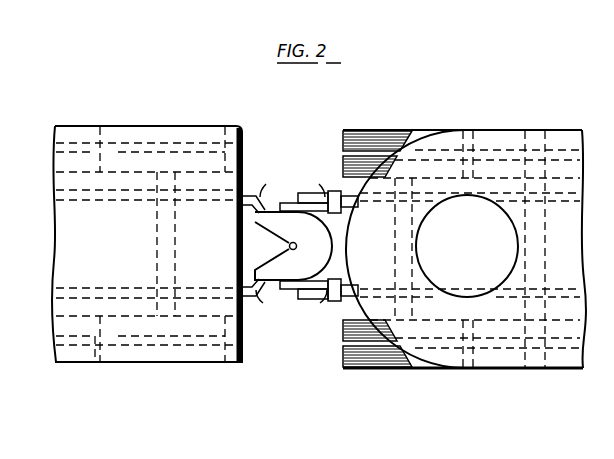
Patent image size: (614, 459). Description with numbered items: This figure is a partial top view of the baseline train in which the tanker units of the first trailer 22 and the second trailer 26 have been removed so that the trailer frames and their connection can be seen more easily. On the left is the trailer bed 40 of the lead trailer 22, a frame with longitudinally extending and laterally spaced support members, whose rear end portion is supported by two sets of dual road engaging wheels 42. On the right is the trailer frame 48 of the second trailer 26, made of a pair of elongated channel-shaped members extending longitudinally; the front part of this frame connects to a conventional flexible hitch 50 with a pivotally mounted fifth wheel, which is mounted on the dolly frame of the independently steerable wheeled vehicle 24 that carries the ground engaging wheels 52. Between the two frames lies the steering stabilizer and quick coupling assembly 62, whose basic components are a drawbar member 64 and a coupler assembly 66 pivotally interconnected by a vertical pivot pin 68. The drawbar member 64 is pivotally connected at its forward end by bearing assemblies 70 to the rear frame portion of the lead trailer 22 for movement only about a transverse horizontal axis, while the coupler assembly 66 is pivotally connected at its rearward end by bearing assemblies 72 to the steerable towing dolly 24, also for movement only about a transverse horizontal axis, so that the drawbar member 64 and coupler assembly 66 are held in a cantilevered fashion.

The first trailer 22 is at (120, 105).
The steerable wheeled vehicle 24 is at (331, 380).
The second trailer 26 is at (484, 112).
The trailer bed 40 is at (244, 131).
The dual road engaging wheels 42 is at (192, 125).
The trailer frame 48 is at (519, 366).
The flexible hitch 50 is at (479, 256).
The ground engaging wheels 52 is at (381, 140).
The steering stabilizer and quick coupling assembly 62 is at (288, 314).
The drawbar member 64 is at (274, 199).
The coupler assembly 66 is at (295, 195).
The vertical pivot pin 68 is at (297, 246).
The bearing assemblies 70 is at (263, 196).
The bearing assemblies 72 is at (331, 190).